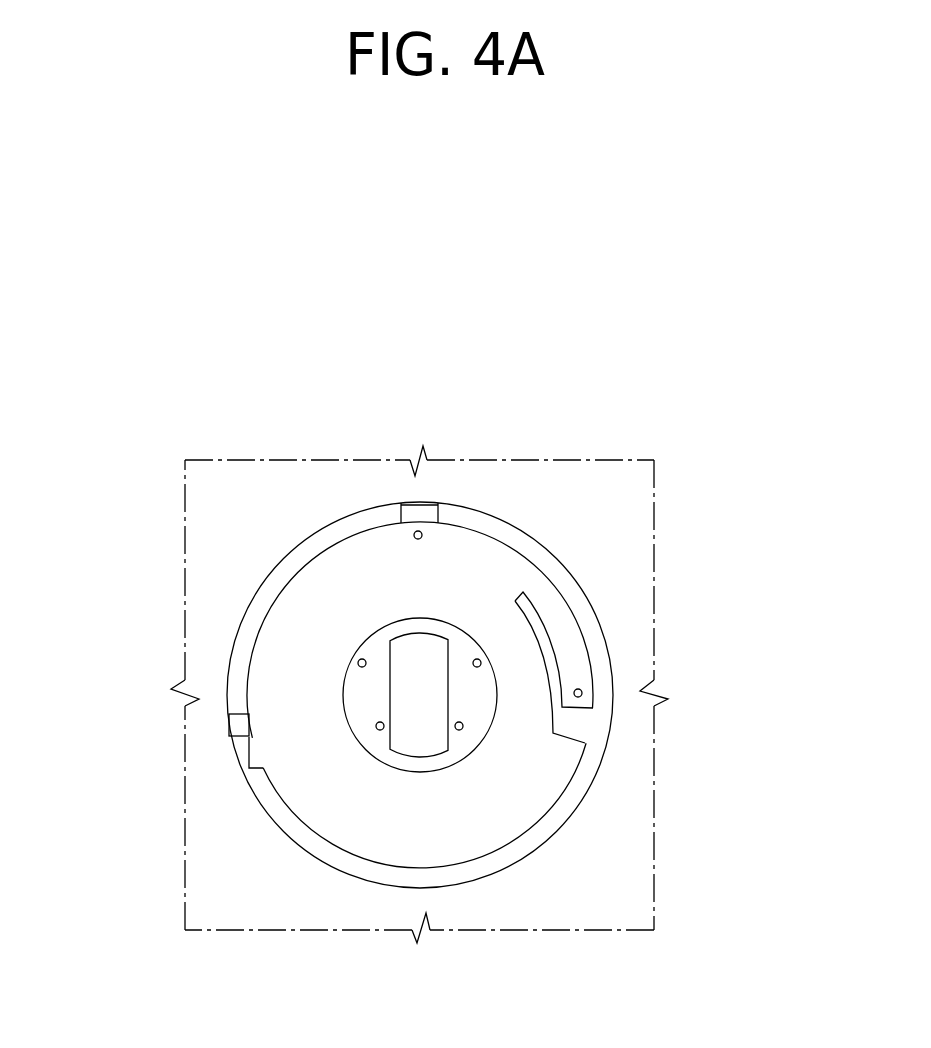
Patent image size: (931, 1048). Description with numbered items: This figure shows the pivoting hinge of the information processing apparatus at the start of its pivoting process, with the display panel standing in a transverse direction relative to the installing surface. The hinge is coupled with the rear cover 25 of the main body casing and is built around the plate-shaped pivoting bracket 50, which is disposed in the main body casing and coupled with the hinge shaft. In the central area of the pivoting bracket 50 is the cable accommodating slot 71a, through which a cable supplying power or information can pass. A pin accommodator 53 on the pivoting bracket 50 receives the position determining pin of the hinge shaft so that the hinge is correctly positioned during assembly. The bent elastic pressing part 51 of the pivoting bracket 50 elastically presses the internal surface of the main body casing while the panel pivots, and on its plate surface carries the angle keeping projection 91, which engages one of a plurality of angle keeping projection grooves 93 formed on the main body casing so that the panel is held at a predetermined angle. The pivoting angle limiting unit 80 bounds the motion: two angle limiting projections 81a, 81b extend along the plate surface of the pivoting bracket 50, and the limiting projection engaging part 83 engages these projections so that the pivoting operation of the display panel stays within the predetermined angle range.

The rear cover 25 is at (246, 460).
The pivoting angle limiting unit 80 is at (83, 505).
The angle limiting projection 81a is at (396, 524).
The angle limiting projection 81b is at (255, 766).
The limiting projection engaging part 83 is at (228, 727).
The pivoting bracket 50 is at (558, 760).
The elastic pressing part 51 is at (572, 628).
The angle keeping projection 91 is at (583, 693).
The angle keeping projection groove 93 is at (418, 531).
The pin accommodator 53 is at (383, 733).
The cable accommodating slot 71a is at (392, 713).